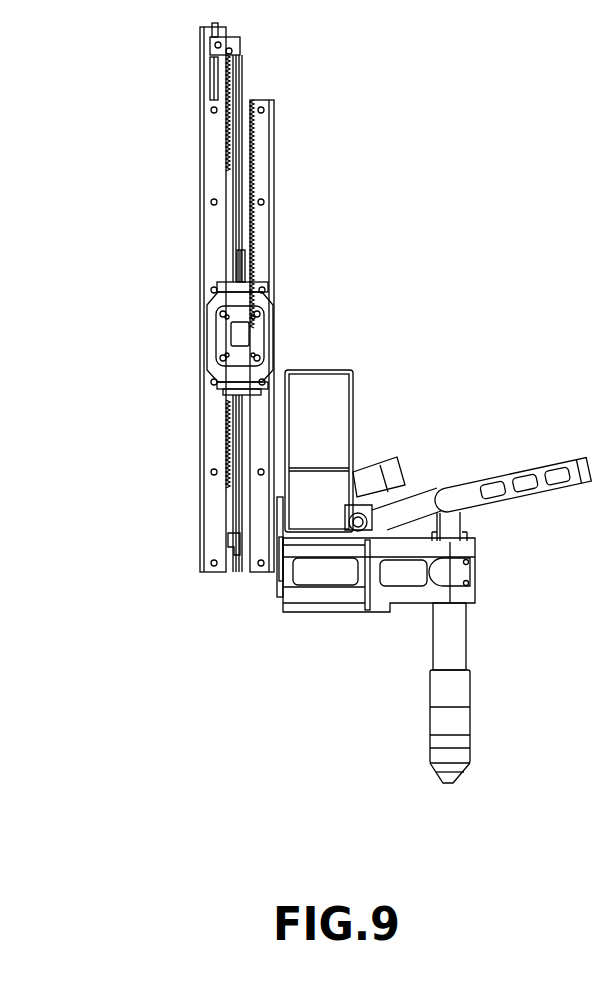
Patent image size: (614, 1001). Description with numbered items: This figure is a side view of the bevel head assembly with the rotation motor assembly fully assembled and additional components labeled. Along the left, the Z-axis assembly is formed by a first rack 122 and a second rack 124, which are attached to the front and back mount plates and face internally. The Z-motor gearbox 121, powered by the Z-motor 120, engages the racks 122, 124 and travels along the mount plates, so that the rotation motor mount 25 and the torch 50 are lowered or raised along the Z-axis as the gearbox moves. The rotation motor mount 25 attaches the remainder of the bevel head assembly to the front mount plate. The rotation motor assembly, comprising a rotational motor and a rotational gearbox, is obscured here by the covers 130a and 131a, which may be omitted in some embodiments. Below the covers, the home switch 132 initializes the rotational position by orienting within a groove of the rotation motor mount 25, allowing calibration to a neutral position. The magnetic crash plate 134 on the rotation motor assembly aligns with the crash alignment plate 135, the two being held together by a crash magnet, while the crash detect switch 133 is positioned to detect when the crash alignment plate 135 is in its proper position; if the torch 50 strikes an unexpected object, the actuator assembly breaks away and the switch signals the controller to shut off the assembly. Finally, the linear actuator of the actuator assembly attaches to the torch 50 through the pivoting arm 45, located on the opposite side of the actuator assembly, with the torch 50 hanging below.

The first rack 122 is at (215, 168).
The second rack 124 is at (252, 183).
The Z-motor 120 is at (223, 340).
The Z-motor gearbox 121 is at (216, 312).
The rotation motor mount 25 is at (280, 521).
The cover 130a is at (323, 385).
The cover 131a is at (325, 500).
The pivoting arm 45 is at (543, 475).
The home switch 132 is at (300, 545).
The crash detect switch 133 is at (358, 557).
The magnetic crash plate 134 is at (363, 592).
The crash alignment plate 135 is at (367, 608).
The torch 50 is at (457, 644).